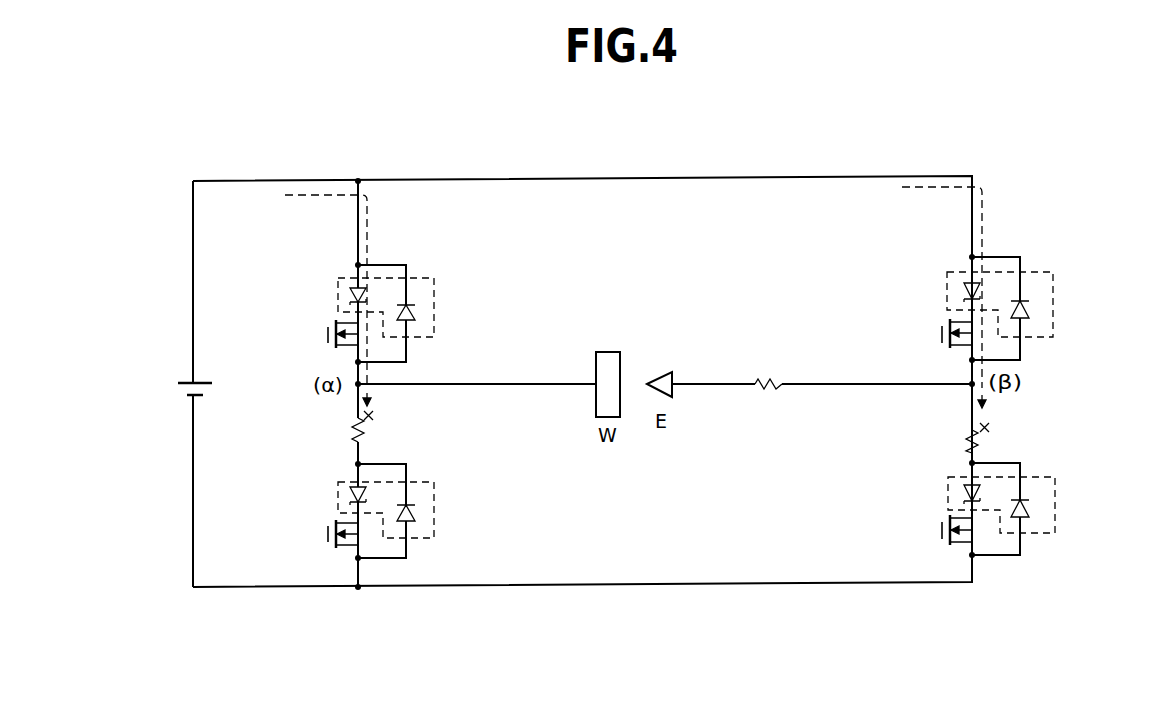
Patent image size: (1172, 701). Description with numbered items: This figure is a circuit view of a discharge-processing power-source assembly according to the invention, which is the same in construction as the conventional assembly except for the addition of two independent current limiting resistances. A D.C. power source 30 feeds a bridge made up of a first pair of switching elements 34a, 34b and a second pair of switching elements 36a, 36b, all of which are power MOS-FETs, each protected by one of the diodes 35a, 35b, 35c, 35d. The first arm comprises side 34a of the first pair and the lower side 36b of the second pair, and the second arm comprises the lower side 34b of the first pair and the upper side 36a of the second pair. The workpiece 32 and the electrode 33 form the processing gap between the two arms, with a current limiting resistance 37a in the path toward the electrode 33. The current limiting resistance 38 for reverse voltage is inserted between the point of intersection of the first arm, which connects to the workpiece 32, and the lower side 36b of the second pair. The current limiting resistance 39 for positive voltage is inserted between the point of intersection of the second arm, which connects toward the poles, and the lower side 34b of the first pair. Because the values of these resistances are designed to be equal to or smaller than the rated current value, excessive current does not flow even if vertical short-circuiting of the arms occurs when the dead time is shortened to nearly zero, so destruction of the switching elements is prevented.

The D.C. power source 30 is at (200, 378).
The workpiece 32 is at (605, 350).
The electrode 33 is at (668, 368).
The first pair of switching elements (upper side) 34a is at (326, 333).
The first pair of switching elements (lower side) 34b is at (940, 532).
The diode for protecting the power MOS-FET 35a is at (437, 285).
The diode for protecting the power MOS-FET 35b is at (437, 485).
The diode for protecting the power MOS-FET 35c is at (1055, 290).
The diode for protecting the power MOS-FET 35d is at (1057, 490).
The second pair of switching elements (upper side) 36a is at (935, 337).
The second pair of switching elements (lower side) 36b is at (323, 540).
The current limiting resistance 37a is at (770, 395).
The current limiting resistance for reverse voltage 38 is at (343, 433).
The current limiting resistance for positive voltage 39 is at (962, 445).